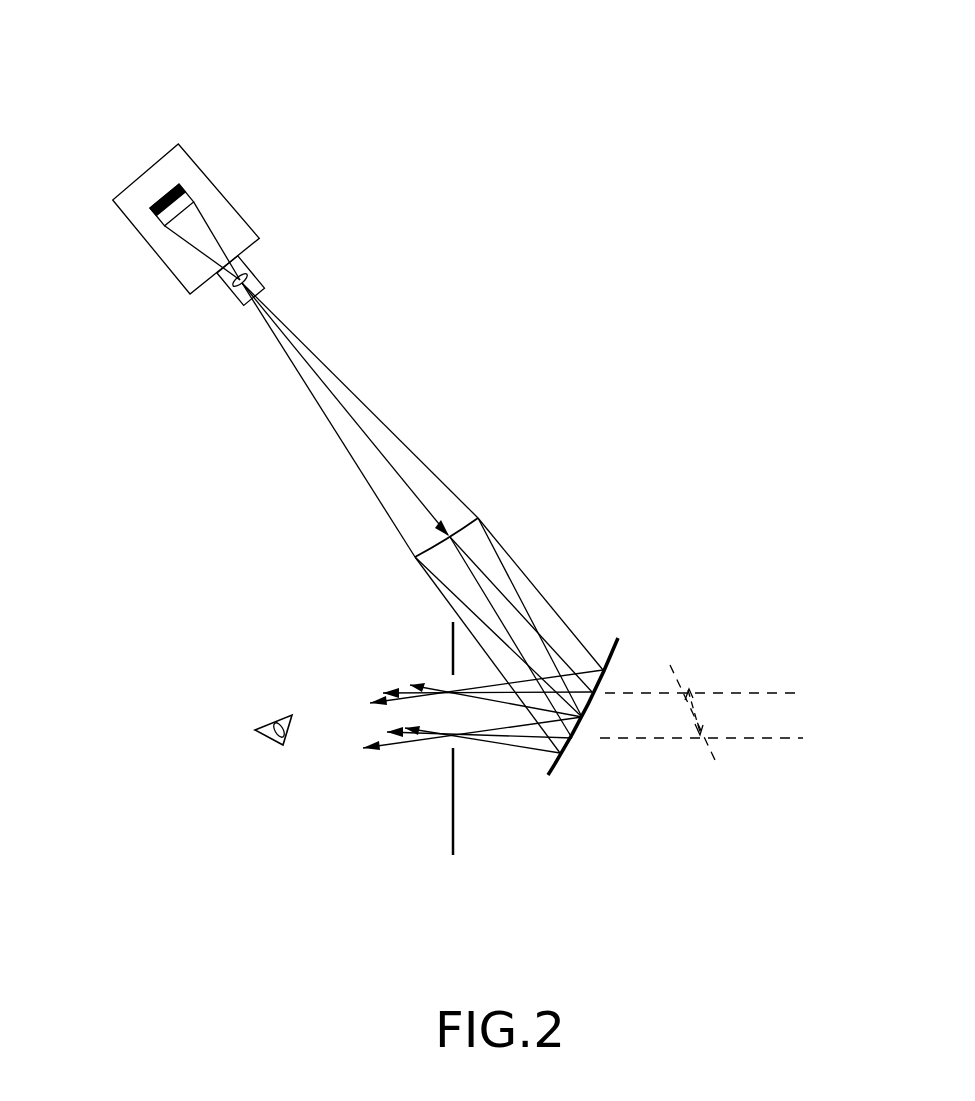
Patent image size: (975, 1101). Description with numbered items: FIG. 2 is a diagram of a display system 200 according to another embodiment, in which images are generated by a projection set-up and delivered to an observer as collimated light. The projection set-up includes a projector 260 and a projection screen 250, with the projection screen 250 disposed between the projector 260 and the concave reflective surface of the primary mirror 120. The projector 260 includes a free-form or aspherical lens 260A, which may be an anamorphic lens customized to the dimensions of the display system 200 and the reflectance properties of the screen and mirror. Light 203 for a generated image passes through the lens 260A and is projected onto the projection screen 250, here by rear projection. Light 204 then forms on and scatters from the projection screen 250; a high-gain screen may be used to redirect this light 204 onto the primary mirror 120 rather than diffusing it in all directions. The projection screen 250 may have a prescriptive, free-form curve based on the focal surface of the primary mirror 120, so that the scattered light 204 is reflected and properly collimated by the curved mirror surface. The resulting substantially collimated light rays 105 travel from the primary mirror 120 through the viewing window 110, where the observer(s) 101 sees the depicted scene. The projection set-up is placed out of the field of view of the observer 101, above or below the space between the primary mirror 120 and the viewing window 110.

The display system 200 is at (124, 90).
The projector 260 is at (250, 230).
The free-form lens 260A is at (220, 300).
The light 203 is at (387, 451).
The projection screen 250 is at (472, 515).
The light 204 is at (537, 641).
The primary mirror 120 is at (573, 752).
The collimated light rays 105 is at (498, 727).
The viewing window 110 is at (452, 838).
The observer(s) 101 is at (305, 821).